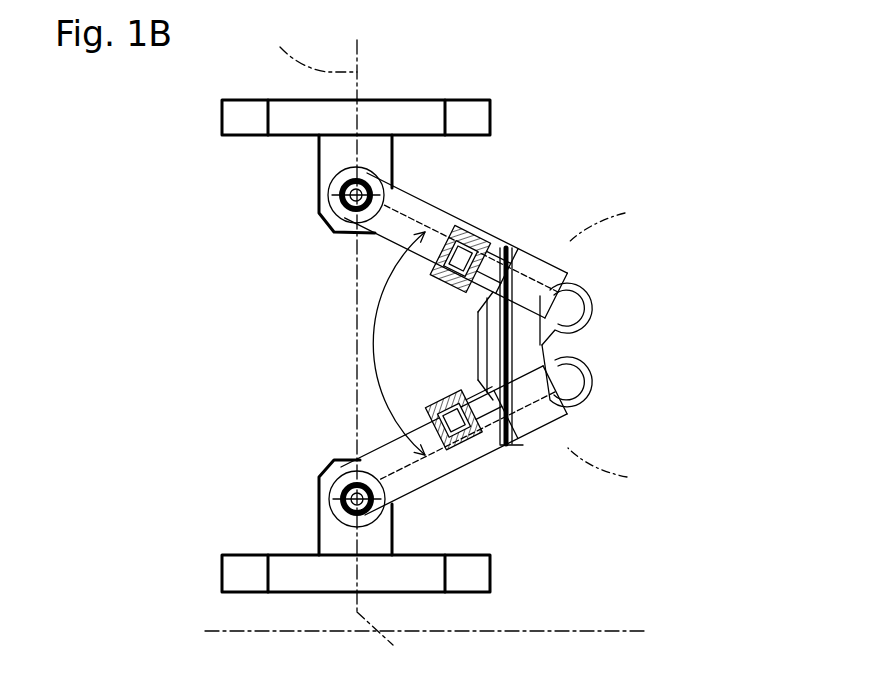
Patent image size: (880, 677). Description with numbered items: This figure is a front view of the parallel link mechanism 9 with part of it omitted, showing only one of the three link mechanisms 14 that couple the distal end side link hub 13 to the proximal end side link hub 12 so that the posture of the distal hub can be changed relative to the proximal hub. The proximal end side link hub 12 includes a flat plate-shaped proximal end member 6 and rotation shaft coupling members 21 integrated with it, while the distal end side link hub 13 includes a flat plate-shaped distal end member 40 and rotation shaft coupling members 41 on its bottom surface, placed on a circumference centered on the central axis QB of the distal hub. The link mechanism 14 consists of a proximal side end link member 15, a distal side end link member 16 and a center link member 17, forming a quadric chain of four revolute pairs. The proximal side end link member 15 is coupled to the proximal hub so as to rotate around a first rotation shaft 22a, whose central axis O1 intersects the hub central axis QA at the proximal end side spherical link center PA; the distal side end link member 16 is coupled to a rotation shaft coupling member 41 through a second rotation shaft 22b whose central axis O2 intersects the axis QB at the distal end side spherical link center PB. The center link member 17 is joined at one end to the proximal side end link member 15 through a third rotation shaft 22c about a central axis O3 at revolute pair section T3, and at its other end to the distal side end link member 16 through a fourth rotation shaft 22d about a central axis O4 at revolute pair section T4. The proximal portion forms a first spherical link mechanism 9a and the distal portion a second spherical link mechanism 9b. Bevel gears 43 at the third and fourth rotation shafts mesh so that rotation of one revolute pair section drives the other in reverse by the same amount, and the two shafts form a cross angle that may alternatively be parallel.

The parallel link mechanism 9 is at (614, 79).
The first spherical link mechanism 9a is at (263, 459).
The second spherical link mechanism 9b is at (263, 232).
The proximal end side link hub 12 is at (567, 582).
The distal end side link hub 13 is at (550, 64).
The proximal end member 6 is at (463, 572).
The rotation shaft coupling member 21 is at (373, 547).
The distal end member 40 is at (410, 117).
The rotation shaft coupling member 41 is at (383, 158).
The link mechanism 14 is at (554, 197).
The proximal side end link member 15 is at (430, 488).
The distal side end link member 16 is at (442, 204).
The center link member 17 is at (540, 440).
The bevel gear 43 is at (582, 288).
The first rotation shaft 22a is at (350, 522).
The second rotation shaft 22b is at (335, 215).
The third rotation shaft 22c is at (593, 377).
The fourth rotation shaft 22d is at (593, 315).
The proximal end side spherical link center PA is at (343, 500).
The distal end side spherical link center PB is at (343, 197).
The central axis of first rotation shaft O1 is at (357, 499).
The central axis of second rotation shaft O2 is at (356, 195).
The central axis of third rotation shaft O3 is at (613, 472).
The central axis of fourth rotation shaft O4 is at (617, 219).
The central axis of proximal end side link hub QA is at (385, 643).
The central axis of distal end side link hub QB is at (307, 44).
The revolute pair section T3 is at (604, 363).
The revolute pair section T4 is at (604, 329).